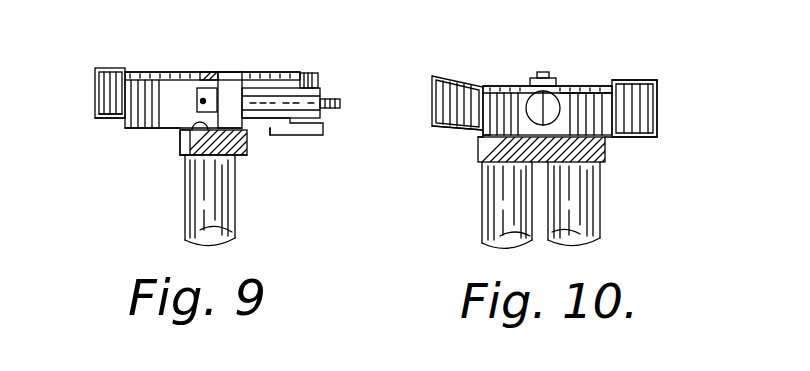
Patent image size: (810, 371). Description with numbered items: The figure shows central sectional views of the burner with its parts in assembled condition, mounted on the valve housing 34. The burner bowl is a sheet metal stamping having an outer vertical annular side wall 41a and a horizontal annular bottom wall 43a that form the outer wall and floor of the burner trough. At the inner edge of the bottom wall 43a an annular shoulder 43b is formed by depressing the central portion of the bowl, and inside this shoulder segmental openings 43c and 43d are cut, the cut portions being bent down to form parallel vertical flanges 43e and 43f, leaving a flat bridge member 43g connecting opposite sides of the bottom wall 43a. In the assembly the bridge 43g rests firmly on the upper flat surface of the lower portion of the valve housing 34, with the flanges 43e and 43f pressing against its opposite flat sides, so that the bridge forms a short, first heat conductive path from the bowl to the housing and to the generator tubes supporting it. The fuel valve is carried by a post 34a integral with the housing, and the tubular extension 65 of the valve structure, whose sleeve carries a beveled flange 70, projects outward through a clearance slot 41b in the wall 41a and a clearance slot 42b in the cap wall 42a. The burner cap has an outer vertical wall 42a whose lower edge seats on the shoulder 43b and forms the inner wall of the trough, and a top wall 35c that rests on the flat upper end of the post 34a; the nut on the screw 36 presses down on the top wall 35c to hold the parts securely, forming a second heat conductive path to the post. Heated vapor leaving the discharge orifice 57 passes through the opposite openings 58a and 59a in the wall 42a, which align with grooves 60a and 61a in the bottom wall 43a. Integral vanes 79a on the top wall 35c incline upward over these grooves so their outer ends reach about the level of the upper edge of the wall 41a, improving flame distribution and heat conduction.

In FIG. 9, the valve housing 34 is at (185, 165).
In FIG. 10, the valve housing 34 is at (605, 152).
In FIG. 9, the post 34a is at (232, 100).
In FIG. 10, the post 34a is at (590, 91).
In FIG. 9, the top wall 35c is at (190, 72).
In FIG. 10, the top wall 35c is at (516, 86).
In FIG. 9, the screw 36 is at (231, 98).
In FIG. 10, the screw 36 is at (552, 76).
In FIG. 9, the outer annular side wall 41a is at (95, 84).
In FIG. 10, the outer annular side wall 41a is at (657, 118).
In FIG. 9, the clearance slot 41b is at (318, 80).
In FIG. 9, the side wall of burner cap 42a is at (134, 86).
In FIG. 10, the side wall of burner cap 42a is at (498, 105).
In FIG. 9, the clearance slot 42b is at (292, 132).
In FIG. 9, the bottom wall 43a is at (100, 118).
In FIG. 10, the bottom wall 43a is at (453, 108).
In FIG. 9, the annular shoulder 43b is at (110, 122).
In FIG. 9, the segmental opening 43c is at (136, 128).
In FIG. 9, the segmental opening 43d is at (262, 132).
In FIG. 9, the vertical flange 43e is at (183, 158).
In FIG. 9, the vertical flange 43f is at (246, 156).
In FIG. 10, the vertical flange 43f is at (605, 174).
In FIG. 9, the bridge member 43g is at (182, 130).
In FIG. 10, the bridge member 43g is at (484, 136).
In FIG. 9, the discharge orifice 57 is at (195, 100).
In FIG. 10, the opening 58a is at (478, 137).
In FIG. 10, the opening 59a is at (640, 82).
In FIG. 10, the groove 60a is at (476, 132).
In FIG. 10, the groove 61a is at (615, 133).
In FIG. 9, the tubular extension 65 is at (291, 100).
In FIG. 10, the beveled flange 70 is at (556, 104).
In FIG. 10, the vane 79a is at (466, 92).